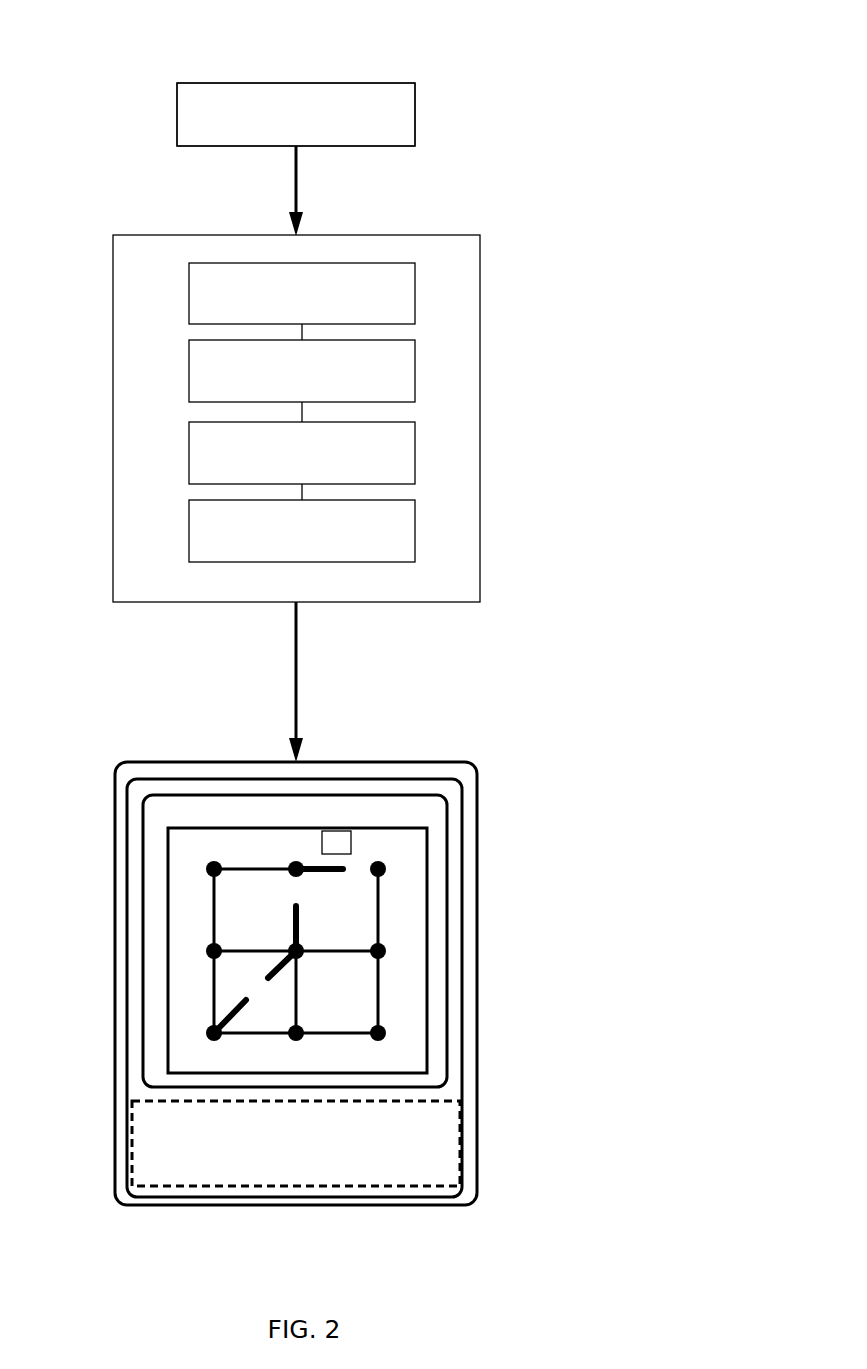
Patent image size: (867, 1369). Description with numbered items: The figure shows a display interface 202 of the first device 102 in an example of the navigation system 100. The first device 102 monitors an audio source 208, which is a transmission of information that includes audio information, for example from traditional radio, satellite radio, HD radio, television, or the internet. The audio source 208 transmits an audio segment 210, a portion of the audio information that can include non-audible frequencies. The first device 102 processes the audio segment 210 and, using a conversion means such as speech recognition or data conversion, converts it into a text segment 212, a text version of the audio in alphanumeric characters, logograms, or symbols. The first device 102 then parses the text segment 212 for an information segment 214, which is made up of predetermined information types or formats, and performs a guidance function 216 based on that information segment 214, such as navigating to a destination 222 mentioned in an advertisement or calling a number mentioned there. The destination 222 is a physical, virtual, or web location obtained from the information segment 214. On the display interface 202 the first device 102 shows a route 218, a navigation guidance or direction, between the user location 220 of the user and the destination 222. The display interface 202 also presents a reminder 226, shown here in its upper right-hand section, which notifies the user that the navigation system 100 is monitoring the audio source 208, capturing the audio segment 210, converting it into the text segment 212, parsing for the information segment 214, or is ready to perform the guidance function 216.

The navigation system 100 is at (128, 48).
The first device 102 is at (137, 236).
The audio source 208 is at (273, 144).
The audio segment 210 is at (391, 320).
The text segment 212 is at (279, 396).
The information segment 214 is at (391, 480).
The guidance function 216 is at (391, 556).
The display interface 202 is at (266, 846).
The reminder 226 is at (335, 831).
The destination 222 is at (385, 862).
The route 218 is at (268, 978).
The user location 220 is at (214, 1030).